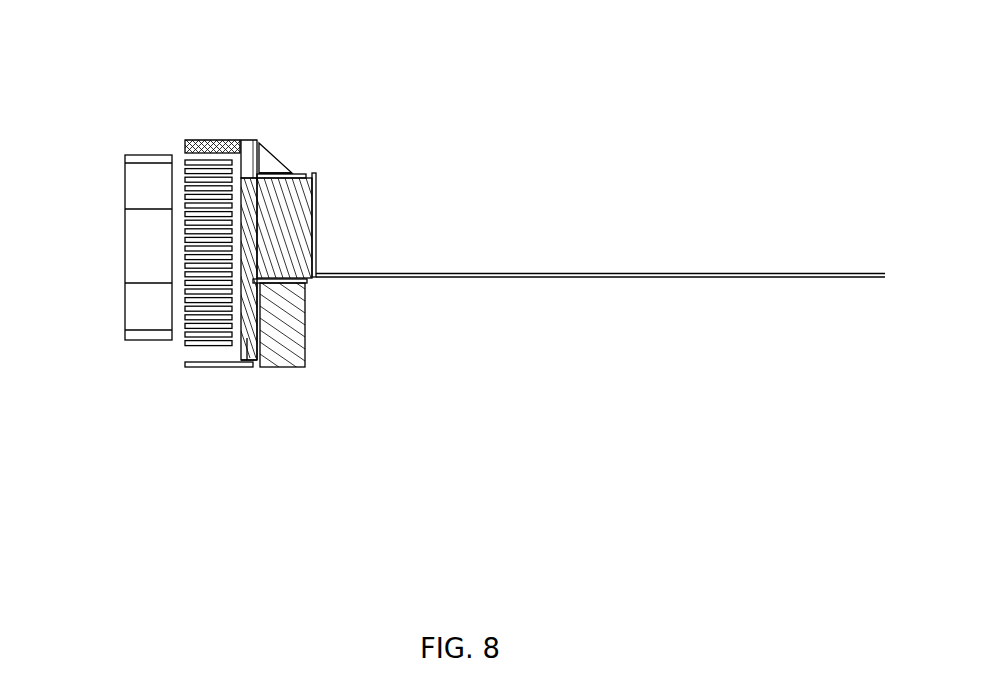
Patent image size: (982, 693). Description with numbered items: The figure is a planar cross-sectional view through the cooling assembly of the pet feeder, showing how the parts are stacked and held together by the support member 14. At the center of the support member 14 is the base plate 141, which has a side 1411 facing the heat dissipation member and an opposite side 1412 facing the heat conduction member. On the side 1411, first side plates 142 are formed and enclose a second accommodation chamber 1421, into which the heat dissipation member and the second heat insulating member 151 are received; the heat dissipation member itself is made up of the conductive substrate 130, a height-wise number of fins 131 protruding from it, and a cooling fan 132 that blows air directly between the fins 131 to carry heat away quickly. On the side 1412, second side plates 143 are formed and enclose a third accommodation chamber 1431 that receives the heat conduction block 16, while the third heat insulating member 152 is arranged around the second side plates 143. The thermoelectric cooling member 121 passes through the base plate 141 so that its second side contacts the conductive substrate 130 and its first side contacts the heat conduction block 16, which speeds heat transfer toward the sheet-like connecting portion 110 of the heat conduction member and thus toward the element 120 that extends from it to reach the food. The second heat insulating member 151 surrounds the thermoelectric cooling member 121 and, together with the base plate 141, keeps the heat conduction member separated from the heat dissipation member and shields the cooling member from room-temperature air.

The support member 14 is at (345, 76).
The heat conduction block 16 is at (300, 222).
The connecting portion 110 is at (323, 280).
The substrate 120 is at (367, 275).
The thermoelectric cooling member 121 is at (317, 178).
The conductive substrate 130 is at (228, 273).
The fins 131 is at (193, 355).
The cooling fan 132 is at (153, 318).
The base plate 141 is at (258, 142).
The first side plates 142 is at (218, 140).
The second side plates 143 is at (275, 172).
The second heat insulating member 151 is at (247, 340).
The third heat insulating member 152 is at (285, 340).
The side of the base plate facing the heat dissipation member 1411 is at (240, 150).
The side of the base plate facing the heat conduction member 1412 is at (260, 310).
The second accommodation chamber 1421 is at (209, 287).
The third accommodation chamber 1431 is at (282, 168).